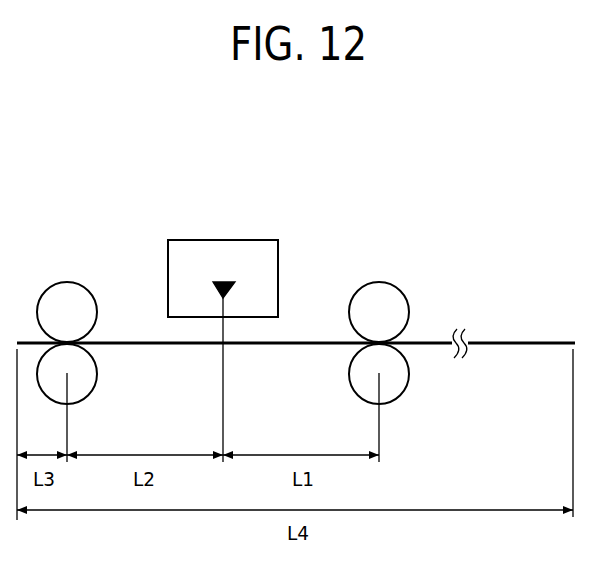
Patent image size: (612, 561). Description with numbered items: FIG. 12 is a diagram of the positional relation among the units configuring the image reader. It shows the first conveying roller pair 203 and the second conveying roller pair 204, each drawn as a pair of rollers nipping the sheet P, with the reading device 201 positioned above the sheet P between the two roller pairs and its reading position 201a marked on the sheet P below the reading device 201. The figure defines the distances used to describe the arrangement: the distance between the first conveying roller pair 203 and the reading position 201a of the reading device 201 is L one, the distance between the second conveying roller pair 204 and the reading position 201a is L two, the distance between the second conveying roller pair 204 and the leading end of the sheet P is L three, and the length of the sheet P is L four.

The reading device 201 is at (190, 239).
The reading position 201a is at (240, 290).
The first conveying roller pair 203 is at (377, 280).
The second conveying roller pair 204 is at (65, 280).
The sheet P is at (530, 340).